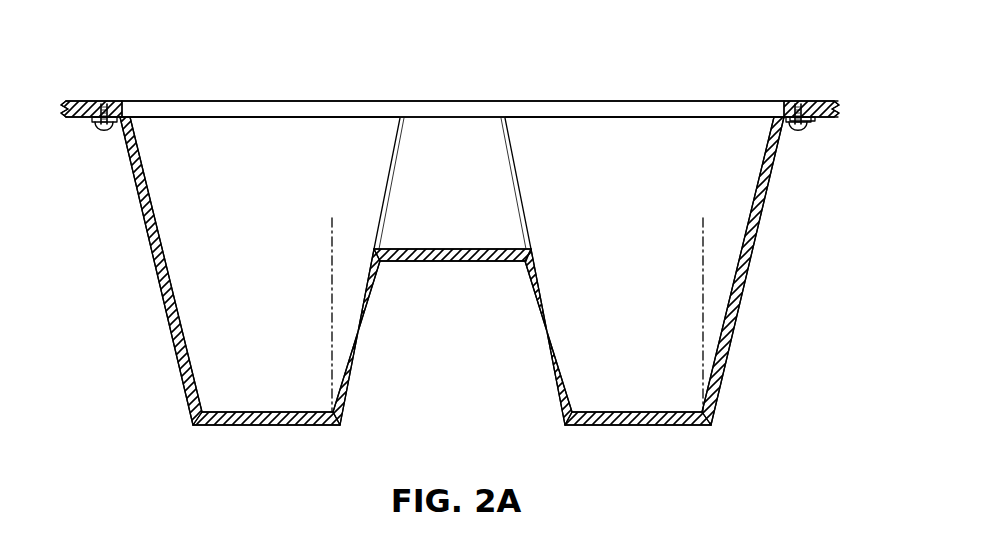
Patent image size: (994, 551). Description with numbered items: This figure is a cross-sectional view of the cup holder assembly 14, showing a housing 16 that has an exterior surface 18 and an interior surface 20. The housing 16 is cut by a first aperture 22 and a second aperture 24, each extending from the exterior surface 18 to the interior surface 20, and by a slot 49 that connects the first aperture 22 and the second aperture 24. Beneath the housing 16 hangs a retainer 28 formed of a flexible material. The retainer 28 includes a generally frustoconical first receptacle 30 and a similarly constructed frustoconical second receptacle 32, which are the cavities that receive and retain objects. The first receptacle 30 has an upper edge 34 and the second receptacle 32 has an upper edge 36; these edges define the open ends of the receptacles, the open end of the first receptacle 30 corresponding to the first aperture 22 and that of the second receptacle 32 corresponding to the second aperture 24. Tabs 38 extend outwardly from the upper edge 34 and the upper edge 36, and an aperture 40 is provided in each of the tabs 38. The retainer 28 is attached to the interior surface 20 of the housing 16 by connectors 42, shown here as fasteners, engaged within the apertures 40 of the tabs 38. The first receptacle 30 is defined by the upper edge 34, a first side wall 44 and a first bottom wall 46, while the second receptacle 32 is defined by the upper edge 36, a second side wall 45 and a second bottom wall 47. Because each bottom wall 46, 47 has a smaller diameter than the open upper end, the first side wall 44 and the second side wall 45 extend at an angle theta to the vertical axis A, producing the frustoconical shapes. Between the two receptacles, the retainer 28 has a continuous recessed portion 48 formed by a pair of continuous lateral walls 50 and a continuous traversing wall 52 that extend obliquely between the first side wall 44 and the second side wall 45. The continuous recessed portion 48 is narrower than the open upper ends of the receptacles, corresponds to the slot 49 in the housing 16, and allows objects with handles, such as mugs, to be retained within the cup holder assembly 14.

The cup holder assembly 14 is at (128, 80).
The housing 16 is at (826, 100).
The exterior surface 18 is at (809, 100).
The interior surface 20 is at (816, 118).
The first aperture 22 is at (248, 100).
The second aperture 24 is at (650, 100).
The retainer 28 is at (460, 354).
The first receptacle 30 is at (259, 201).
The second receptacle 32 is at (600, 201).
The upper edge 34 is at (300, 118).
The upper edge 36 is at (710, 118).
The tabs 38 is at (92, 120).
The aperture 40 is at (98, 133).
The connectors 42 is at (112, 130).
The first side wall 44 is at (151, 296).
The second side wall 45 is at (549, 372).
The first bottom wall 46 is at (218, 426).
The second bottom wall 47 is at (600, 426).
The continuous recessed portion 48 is at (440, 180).
The slot 49 is at (465, 100).
The continuous lateral walls 50 is at (487, 223).
The continuous traversing wall 52 is at (455, 262).